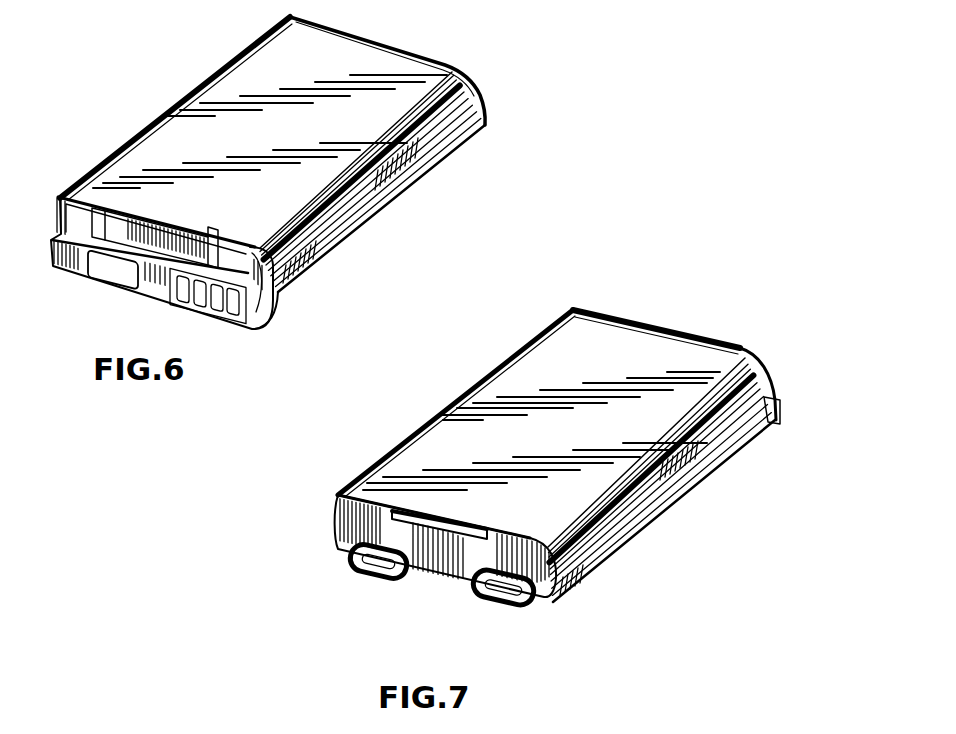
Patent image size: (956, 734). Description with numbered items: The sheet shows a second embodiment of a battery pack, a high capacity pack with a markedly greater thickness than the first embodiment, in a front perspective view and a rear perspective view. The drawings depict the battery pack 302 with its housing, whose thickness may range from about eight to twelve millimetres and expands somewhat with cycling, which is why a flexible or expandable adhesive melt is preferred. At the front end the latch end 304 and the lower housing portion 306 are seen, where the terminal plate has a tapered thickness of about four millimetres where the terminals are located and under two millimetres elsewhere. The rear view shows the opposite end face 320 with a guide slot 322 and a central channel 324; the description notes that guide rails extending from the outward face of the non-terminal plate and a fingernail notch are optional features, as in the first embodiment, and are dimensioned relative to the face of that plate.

In FIG. 6, the battery pack housing 302 is at (323, 128).
In FIG. 6, the latch end of battery pack 304 is at (60, 267).
In FIG. 6, the bottom housing portion 306 is at (290, 287).
In FIG. 7, the contact end face 320 is at (453, 587).
In FIG. 7, the guide slot 322 is at (363, 573).
In FIG. 7, the central channel 324 is at (420, 563).